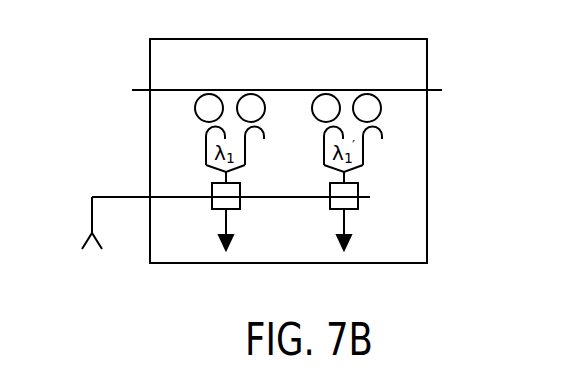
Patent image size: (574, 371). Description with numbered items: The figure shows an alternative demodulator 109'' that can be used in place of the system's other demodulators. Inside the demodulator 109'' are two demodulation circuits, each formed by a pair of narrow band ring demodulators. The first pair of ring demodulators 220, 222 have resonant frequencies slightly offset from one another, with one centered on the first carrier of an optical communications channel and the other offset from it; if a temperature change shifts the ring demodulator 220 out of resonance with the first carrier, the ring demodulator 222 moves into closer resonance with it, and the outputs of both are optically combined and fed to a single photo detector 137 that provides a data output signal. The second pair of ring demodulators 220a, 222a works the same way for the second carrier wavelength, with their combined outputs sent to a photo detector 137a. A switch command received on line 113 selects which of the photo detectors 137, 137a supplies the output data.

The demodulator 109'' is at (326, 151).
The line 113 is at (92, 214).
The narrow band ring demodulator 220 is at (208, 102).
The narrow band ring demodulator 222 is at (247, 102).
The narrow band ring demodulator 220a is at (325, 102).
The narrow band ring demodulator 222a is at (368, 102).
The photo detector 137 is at (212, 189).
The photo detector 137a is at (358, 192).